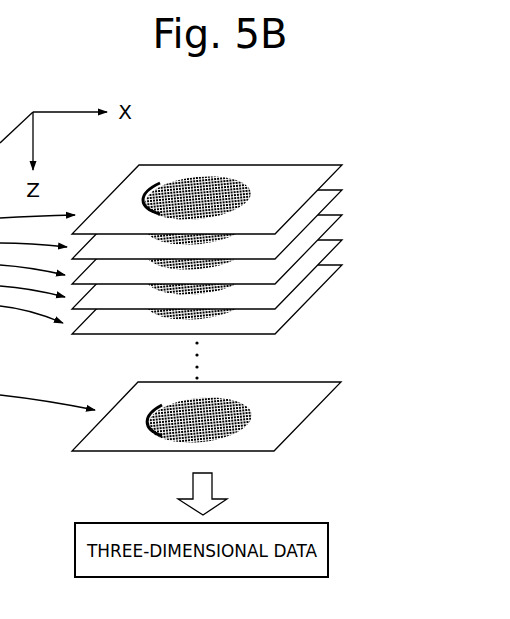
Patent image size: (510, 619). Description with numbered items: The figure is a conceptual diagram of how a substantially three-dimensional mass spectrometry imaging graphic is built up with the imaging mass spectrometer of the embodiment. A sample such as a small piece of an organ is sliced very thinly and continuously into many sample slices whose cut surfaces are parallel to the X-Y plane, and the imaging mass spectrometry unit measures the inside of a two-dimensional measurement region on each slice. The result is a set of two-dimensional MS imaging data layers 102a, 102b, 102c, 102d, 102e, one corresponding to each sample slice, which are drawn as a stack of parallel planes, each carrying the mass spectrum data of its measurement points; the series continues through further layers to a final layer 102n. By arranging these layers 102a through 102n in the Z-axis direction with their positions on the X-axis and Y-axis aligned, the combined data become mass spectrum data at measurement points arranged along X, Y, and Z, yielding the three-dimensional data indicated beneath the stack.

The two-dimensional image slice 102a is at (342, 165).
The two-dimensional image slice 102b is at (342, 190).
The two-dimensional image slice 102c is at (342, 215).
The two-dimensional image slice 102d is at (342, 240).
The two-dimensional image slice 102e is at (342, 265).
The two-dimensional image slice 102n is at (341, 382).